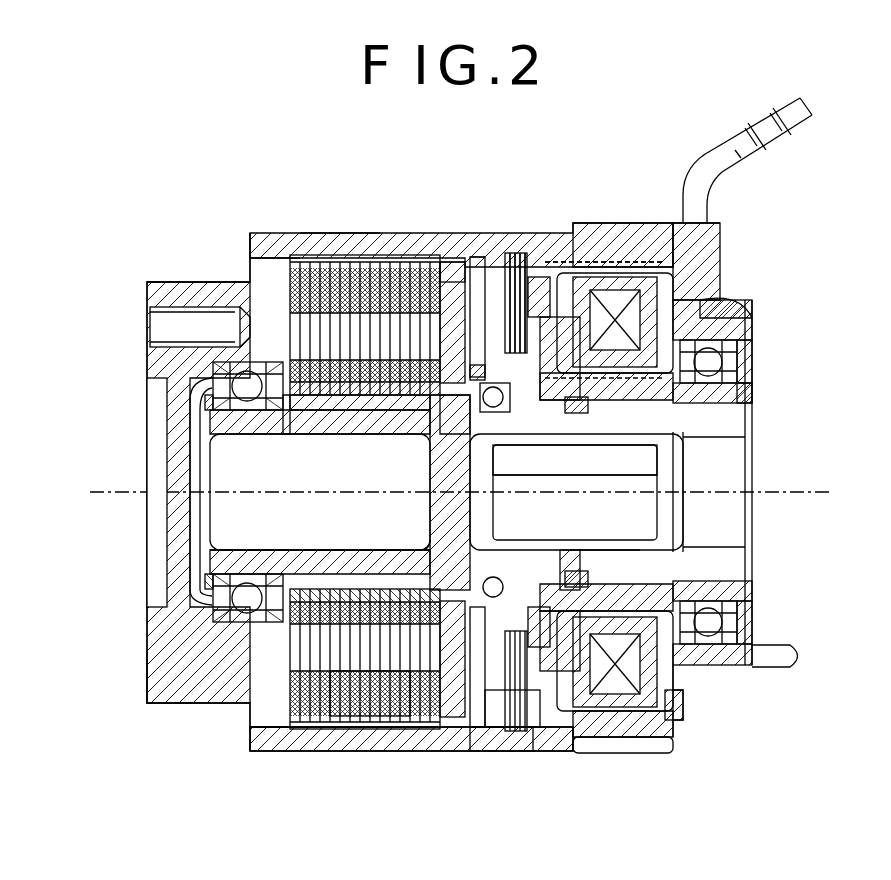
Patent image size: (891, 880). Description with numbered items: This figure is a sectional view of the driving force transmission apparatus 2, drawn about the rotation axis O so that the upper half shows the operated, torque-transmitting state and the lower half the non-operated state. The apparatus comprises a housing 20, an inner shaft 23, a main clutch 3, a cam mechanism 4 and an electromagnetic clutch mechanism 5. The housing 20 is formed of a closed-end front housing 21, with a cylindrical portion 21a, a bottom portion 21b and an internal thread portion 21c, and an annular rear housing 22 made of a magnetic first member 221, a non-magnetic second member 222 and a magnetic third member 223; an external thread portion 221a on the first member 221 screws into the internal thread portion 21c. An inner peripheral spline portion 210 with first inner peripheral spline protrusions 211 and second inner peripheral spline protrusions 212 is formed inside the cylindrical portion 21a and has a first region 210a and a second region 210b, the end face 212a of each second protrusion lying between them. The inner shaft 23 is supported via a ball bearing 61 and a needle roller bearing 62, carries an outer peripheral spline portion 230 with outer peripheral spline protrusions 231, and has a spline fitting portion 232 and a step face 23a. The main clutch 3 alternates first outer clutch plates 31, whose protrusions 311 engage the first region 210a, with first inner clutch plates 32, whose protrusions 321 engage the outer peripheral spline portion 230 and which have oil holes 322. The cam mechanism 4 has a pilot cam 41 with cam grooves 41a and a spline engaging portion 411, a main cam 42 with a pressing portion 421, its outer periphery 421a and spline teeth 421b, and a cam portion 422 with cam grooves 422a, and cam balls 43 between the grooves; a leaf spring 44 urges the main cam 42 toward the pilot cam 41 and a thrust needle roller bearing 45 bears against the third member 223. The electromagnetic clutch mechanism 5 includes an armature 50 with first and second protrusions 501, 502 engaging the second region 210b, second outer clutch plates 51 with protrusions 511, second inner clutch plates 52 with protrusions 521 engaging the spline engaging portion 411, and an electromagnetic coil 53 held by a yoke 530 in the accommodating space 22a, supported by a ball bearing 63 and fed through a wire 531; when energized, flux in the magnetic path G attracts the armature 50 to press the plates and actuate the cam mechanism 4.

The driving force transmission apparatus 2 is at (803, 177).
The main clutch 3 is at (283, 735).
The cam mechanism 4 is at (452, 262).
The electromagnetic clutch mechanism 5 is at (540, 262).
The housing 20 is at (785, 203).
The front housing 21 is at (705, 238).
The cylindrical portion 21a is at (342, 240).
The bottom portion 21b is at (267, 283).
The internal thread portion 21c is at (678, 236).
The rear housing 22 is at (705, 265).
The accommodating space 22a is at (690, 708).
The inner shaft 23 is at (692, 563).
The step face 23a is at (433, 553).
The first outer clutch plates 31 is at (405, 745).
The first inner clutch plates 32 is at (200, 510).
The pilot cam 41 is at (645, 440).
The cam grooves 41a is at (575, 480).
The main cam 42 is at (362, 193).
The cam balls 43 is at (565, 420).
The leaf spring 44 is at (514, 531).
The thrust needle roller bearing 45 is at (560, 575).
The armature 50 is at (478, 262).
The second outer clutch plates 51 is at (540, 727).
The second inner clutch plates 52 is at (512, 742).
The electromagnetic coil 53 is at (660, 320).
The ball bearing 61 is at (208, 405).
The needle roller bearing 62 is at (655, 410).
The ball bearing 63 is at (737, 360).
The inner peripheral spline portion 210 is at (280, 262).
The first region 210a is at (448, 815).
The second region 210b is at (533, 813).
The first inner peripheral spline protrusions 211 is at (283, 262).
The second inner peripheral spline protrusions 212 is at (283, 722).
The end face 212a is at (505, 740).
The first member 221 is at (608, 240).
The external thread portion 221a is at (645, 752).
The second member 222 is at (560, 262).
The third member 223 is at (752, 400).
The outer peripheral spline portion 230 is at (150, 688).
The outer peripheral spline protrusions 231 is at (345, 575).
The spline fitting portion 232 is at (595, 560).
The protrusions 311 is at (415, 727).
The protrusions 321 is at (330, 400).
The oil holes 322 is at (290, 430).
The spline engaging portion 411 is at (462, 730).
The pressing portion 421 is at (507, 270).
The outer periphery 421a is at (462, 262).
The spline teeth 421b is at (460, 400).
The cam portion 422 is at (515, 270).
The cam grooves 422a is at (500, 412).
The first protrusions 501 is at (492, 262).
The second protrusions 502 is at (482, 710).
The protrusions 511 is at (537, 280).
The protrusions 521 is at (512, 600).
The yoke 530 is at (752, 318).
The wire 531 is at (708, 182).
The magnetic path G is at (667, 270).
The rotation axis O is at (790, 492).